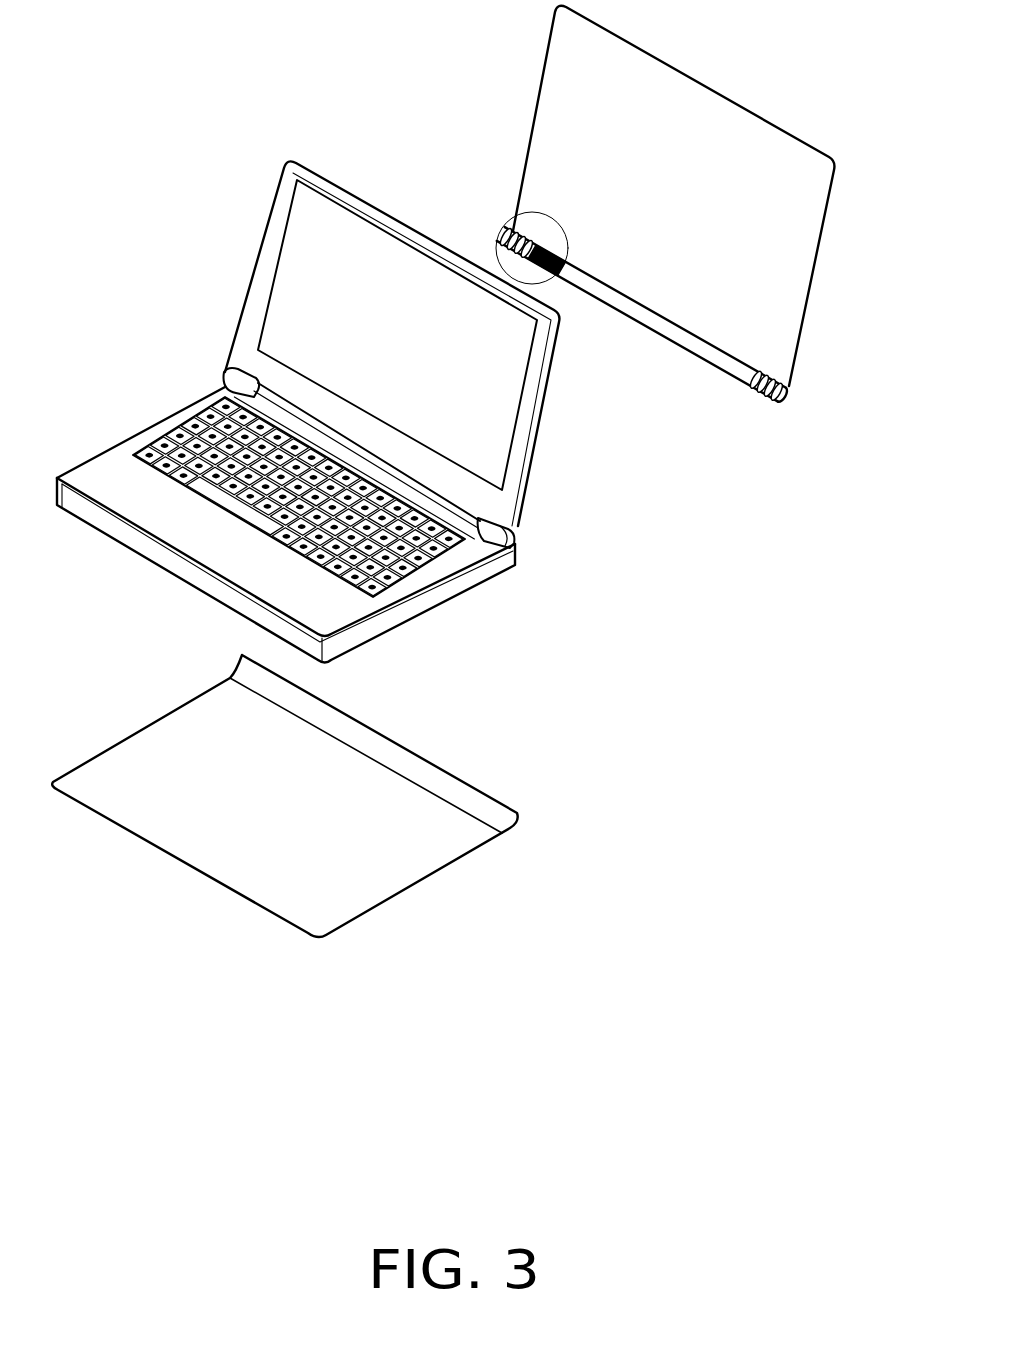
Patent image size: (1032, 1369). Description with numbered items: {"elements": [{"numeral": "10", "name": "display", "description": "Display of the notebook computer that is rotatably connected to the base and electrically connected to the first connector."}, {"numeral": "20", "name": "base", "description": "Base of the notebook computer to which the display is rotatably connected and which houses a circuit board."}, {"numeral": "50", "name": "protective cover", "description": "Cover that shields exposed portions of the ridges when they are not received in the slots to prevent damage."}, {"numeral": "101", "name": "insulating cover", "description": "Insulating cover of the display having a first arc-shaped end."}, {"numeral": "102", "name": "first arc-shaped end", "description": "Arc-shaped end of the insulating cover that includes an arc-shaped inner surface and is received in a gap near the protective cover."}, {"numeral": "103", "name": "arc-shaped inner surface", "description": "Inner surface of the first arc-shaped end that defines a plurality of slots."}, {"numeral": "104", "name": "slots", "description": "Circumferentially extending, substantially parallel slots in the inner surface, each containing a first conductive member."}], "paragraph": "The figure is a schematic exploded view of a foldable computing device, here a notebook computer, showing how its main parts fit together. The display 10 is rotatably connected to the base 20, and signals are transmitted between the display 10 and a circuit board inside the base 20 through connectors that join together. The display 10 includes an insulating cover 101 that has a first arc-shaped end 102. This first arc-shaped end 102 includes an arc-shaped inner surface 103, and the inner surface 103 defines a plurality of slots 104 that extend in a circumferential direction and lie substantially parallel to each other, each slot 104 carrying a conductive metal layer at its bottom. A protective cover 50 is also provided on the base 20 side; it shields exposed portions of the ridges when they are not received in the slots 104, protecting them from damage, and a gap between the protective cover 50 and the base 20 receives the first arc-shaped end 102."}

The display module 10 is at (497, 410).
The main body 20 is at (408, 583).
The cover 50 is at (373, 793).
The panel 101 is at (780, 290).
The connecting bar 102 is at (643, 308).
The knurled end portion 103 is at (700, 355).
The knurled end portion 104 is at (547, 218).